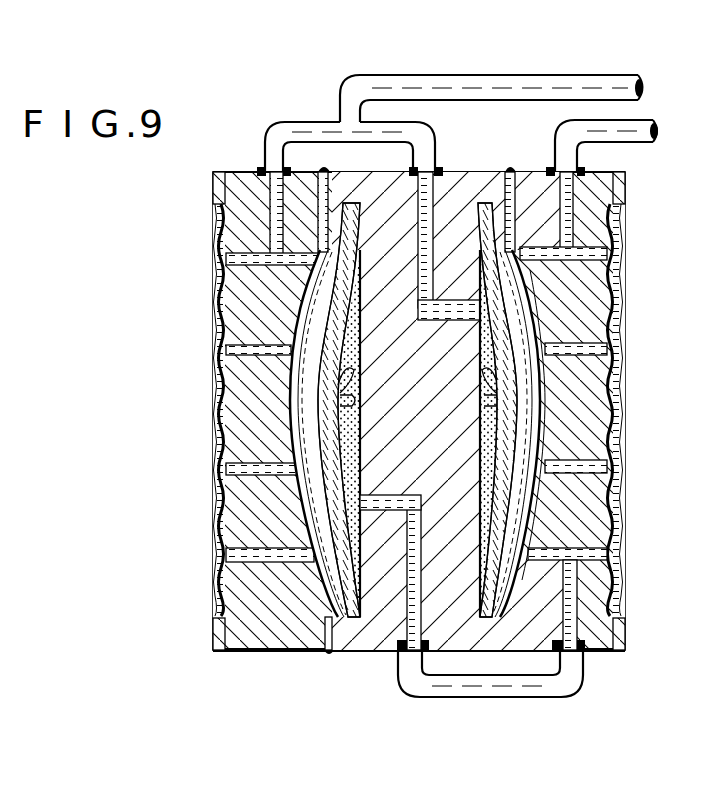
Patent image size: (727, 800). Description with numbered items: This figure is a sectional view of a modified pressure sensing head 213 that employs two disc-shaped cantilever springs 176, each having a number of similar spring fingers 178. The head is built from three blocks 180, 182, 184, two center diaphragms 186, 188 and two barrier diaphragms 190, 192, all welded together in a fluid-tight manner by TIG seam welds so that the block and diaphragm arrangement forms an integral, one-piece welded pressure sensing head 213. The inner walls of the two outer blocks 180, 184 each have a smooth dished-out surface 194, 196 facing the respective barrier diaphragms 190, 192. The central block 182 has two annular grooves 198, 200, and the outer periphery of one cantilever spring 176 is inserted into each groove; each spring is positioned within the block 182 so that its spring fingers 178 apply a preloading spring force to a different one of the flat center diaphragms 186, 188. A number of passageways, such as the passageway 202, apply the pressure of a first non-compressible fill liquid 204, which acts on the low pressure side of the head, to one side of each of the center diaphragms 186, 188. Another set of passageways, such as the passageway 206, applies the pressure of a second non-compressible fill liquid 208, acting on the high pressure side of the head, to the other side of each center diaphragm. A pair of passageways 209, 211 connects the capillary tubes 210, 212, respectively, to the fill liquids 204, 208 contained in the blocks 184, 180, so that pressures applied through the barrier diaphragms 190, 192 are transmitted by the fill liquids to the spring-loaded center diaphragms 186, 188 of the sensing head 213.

The disc-shaped cantilever spring 176 is at (607, 332).
The spring fingers 178 is at (222, 382).
The block 180 is at (272, 626).
The block 182 is at (387, 630).
The block 184 is at (607, 630).
The center diaphragm 186 is at (222, 332).
The center diaphragm 188 is at (541, 382).
The barrier diaphragm 190 is at (222, 442).
The barrier diaphragm 192 is at (605, 460).
The dished-out surface 194 is at (216, 284).
The dished-out surface 196 is at (534, 306).
The annular groove 198 is at (352, 620).
The annular groove 200 is at (481, 200).
The passageway 202 is at (560, 698).
The first non-compressible fill liquid 204 is at (294, 400).
The passageway 206 is at (296, 122).
The second non-compressible fill liquid 208 is at (222, 494).
The passageway 209 is at (628, 222).
The capillary tube 210 is at (650, 132).
The passageway 211 is at (222, 232).
The capillary tube 212 is at (574, 72).
The pressure sensing head 213 is at (188, 643).